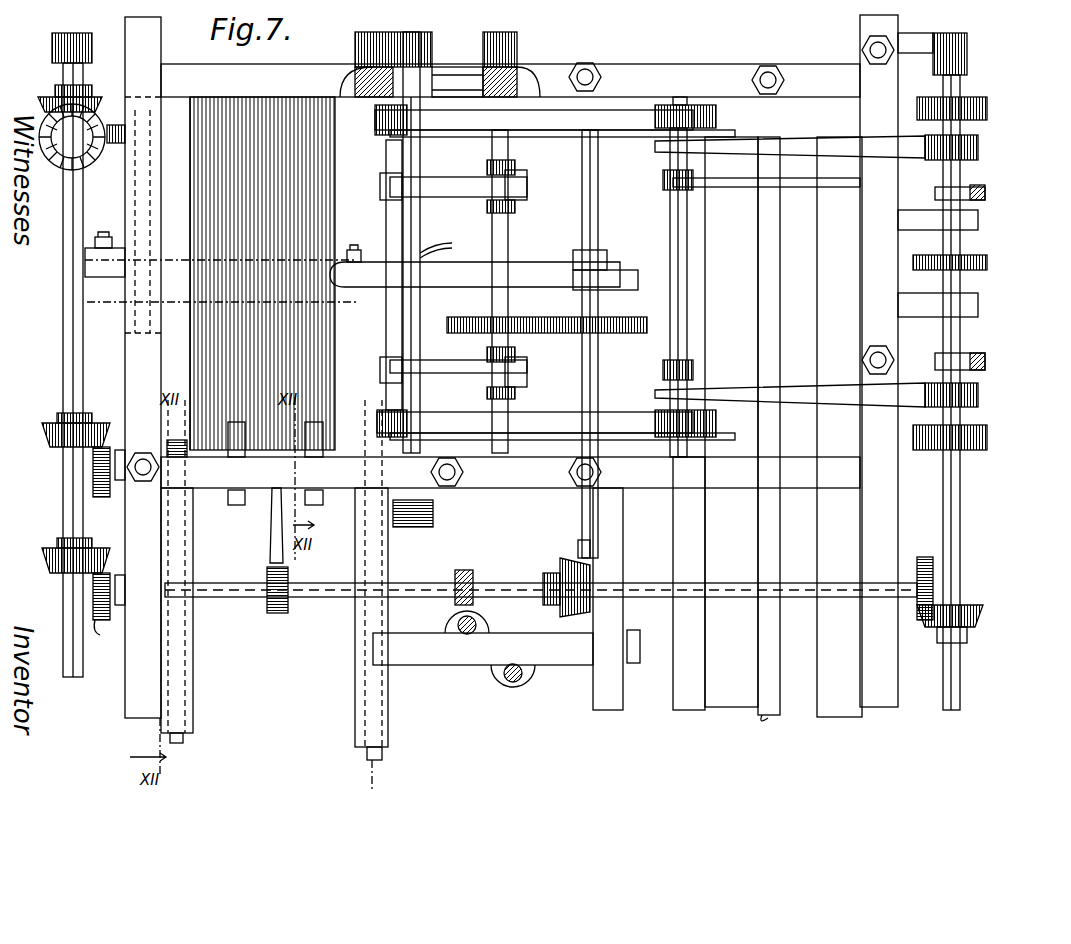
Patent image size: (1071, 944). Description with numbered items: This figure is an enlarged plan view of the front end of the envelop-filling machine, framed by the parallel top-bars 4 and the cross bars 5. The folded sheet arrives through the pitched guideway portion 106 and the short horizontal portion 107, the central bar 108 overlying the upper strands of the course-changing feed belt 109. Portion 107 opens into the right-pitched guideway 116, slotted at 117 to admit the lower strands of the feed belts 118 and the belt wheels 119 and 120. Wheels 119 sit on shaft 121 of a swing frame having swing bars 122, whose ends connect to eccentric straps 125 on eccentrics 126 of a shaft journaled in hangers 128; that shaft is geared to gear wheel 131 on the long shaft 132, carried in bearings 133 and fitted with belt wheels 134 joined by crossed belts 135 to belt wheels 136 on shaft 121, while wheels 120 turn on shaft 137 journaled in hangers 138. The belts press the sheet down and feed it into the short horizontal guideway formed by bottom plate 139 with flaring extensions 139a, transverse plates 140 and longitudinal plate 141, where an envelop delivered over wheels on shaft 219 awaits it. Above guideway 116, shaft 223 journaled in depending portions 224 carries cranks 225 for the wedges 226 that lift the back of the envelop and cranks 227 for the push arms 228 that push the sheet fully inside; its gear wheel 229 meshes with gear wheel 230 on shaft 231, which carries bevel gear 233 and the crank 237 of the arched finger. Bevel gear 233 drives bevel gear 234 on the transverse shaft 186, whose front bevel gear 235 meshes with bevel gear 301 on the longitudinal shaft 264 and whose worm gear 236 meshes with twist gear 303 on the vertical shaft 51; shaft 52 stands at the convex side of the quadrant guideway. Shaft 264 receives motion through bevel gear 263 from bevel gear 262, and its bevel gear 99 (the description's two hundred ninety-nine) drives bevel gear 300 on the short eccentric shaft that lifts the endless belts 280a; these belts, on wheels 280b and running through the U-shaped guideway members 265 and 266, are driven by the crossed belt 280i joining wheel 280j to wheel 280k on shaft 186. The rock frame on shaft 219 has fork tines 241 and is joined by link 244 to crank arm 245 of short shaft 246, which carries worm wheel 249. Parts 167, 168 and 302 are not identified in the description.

The top-bars 4 is at (128, 722).
The cross bars 5 is at (803, 480).
The vertical shaft 51 is at (462, 635).
The vertical shaft 52 is at (515, 682).
The bevel gear 99 is at (45, 430).
The downwardly and forwardly extending guideway portion 106 is at (697, 715).
The short horizontal guideway portion 107 is at (775, 220).
The central longitudinally-extending bar 108 is at (762, 715).
The belt 109 is at (772, 718).
The guideway 116 is at (622, 137).
The slot 117 is at (553, 105).
The feed belts 118 is at (534, 271).
The belt wheels 119 is at (716, 105).
The belt wheels 120 is at (440, 137).
The shaft 121 is at (688, 272).
The swing bars 122 is at (742, 187).
The eccentric straps 125 is at (975, 190).
The eccentrics 126 is at (985, 198).
The hangers 128 is at (978, 216).
The gear wheel 131 is at (987, 263).
The shaft 132 is at (960, 82).
The bearings 133 is at (967, 48).
The belt wheels 134 is at (978, 140).
The crossed belts 135 is at (978, 148).
The belt wheels 136 is at (705, 140).
The shaft 137 is at (420, 200).
The hangers 138 is at (403, 40).
The bottom plate 139 is at (262, 273).
The flaring extensions 139a is at (380, 185).
The transverse plates 140 is at (510, 80).
The longitudinal plate 141 is at (178, 216).
The bevel gear 167 is at (933, 565).
The bevel gear 168 is at (975, 612).
The transverse shaft 186 is at (430, 572).
The shaft 219 is at (386, 225).
The longitudinal shaft 223 is at (508, 240).
The depending portions 224 is at (520, 70).
The cranks 225 is at (480, 60).
The wedges 226 is at (448, 77).
The cranks 227 is at (527, 180).
The push arms 228 is at (458, 285).
The gear wheel 229 is at (468, 333).
The gear wheel 230 is at (545, 287).
The shaft 231 is at (598, 203).
The bevel gear 233 is at (575, 555).
The bevel gear 234 is at (560, 565).
The bevel gear 235 is at (104, 634).
The worm gear 236 is at (464, 570).
The crank 237 is at (620, 270).
The tines 241 is at (452, 258).
The link 244 is at (88, 277).
The crank arm 245 is at (95, 235).
The short longitudinal shaft 246 is at (236, 302).
The worm wheel 249 is at (125, 134).
The bevel gear 262 is at (105, 160).
The bevel gear 263 is at (92, 95).
The longitudinally extending shaft 264 is at (63, 300).
The U-shaped guideway member 265 is at (180, 714).
The U-shaped guideway member 266 is at (355, 730).
The endless belts 280a is at (180, 745).
The belt wheels 280b is at (165, 445).
The crossed belt 280i is at (278, 613).
The belt wheel 280j is at (270, 515).
The belt wheel 280k is at (267, 610).
The bevel gear 300 is at (93, 465).
The bevel gear 301 is at (42, 551).
The bevel gear 302 is at (93, 590).
The twist gear 303 is at (468, 642).